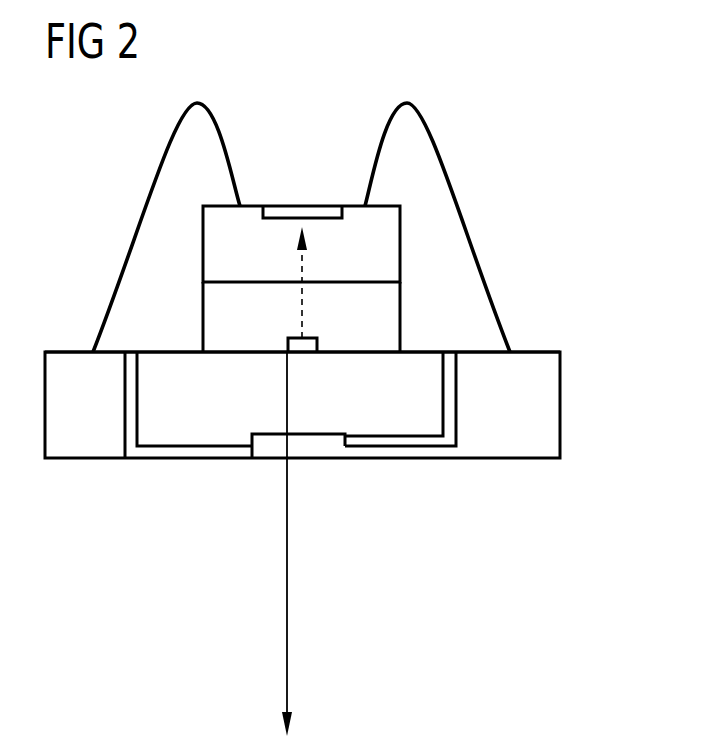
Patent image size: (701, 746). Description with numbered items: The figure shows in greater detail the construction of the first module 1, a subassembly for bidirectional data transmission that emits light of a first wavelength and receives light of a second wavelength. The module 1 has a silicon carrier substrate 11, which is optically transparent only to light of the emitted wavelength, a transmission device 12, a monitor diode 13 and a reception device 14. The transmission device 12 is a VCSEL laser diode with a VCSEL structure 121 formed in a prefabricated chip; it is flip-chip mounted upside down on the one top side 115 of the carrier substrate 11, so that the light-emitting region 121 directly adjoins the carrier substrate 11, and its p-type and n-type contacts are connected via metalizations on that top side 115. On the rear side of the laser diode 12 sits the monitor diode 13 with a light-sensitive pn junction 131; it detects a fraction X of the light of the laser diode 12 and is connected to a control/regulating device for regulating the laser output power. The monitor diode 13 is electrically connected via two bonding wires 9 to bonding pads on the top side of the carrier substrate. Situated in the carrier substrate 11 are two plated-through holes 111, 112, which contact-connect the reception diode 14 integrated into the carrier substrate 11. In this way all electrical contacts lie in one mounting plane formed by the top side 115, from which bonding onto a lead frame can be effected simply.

The module 1 is at (494, 123).
The bonding wires 9 is at (462, 197).
The carrier substrate 11 is at (547, 432).
The plated-through hole 111 is at (195, 460).
The plated-through hole 112 is at (448, 385).
The top side 115 is at (533, 350).
The transmission device 12 is at (390, 313).
The VCSEL structure 121 is at (307, 340).
The monitor diode 13 is at (390, 250).
The light-sensitive pn junction 131 is at (298, 212).
The reception device 14 is at (318, 443).
The fraction of the light X is at (302, 262).